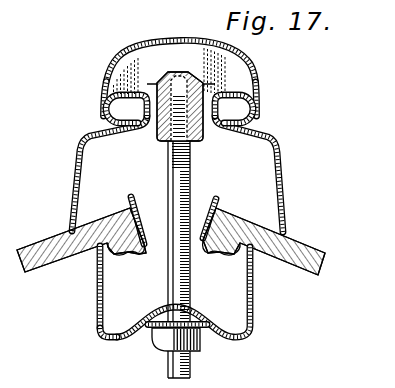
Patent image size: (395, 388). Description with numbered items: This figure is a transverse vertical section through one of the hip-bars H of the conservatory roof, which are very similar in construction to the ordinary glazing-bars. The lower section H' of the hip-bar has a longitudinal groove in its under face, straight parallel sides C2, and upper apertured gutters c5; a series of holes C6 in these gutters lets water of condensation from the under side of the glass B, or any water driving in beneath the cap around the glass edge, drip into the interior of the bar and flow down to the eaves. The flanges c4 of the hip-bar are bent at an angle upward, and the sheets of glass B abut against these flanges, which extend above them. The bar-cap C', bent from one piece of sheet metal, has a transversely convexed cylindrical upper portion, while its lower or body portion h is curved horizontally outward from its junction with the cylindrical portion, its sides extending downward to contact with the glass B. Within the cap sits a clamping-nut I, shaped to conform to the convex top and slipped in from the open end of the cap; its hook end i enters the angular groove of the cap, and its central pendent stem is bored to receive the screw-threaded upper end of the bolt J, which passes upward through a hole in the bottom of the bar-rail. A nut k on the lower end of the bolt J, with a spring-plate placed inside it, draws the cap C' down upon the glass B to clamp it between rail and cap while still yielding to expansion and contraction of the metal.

The bar-cap C' is at (180, 46).
The hook end of clamping-nut i is at (115, 83).
The gutters c5 is at (272, 100).
The clamping-nut I is at (188, 67).
The lower or body portion of the cap h is at (79, 178).
The hip-bar H is at (263, 174).
The bolt J is at (168, 188).
The flanges or tongues c4 is at (233, 203).
The glass B is at (52, 245).
The holes C6 is at (230, 256).
The straight parallel sides C2 is at (270, 296).
The lower section of hip-bar H' is at (83, 334).
The nut k is at (162, 345).